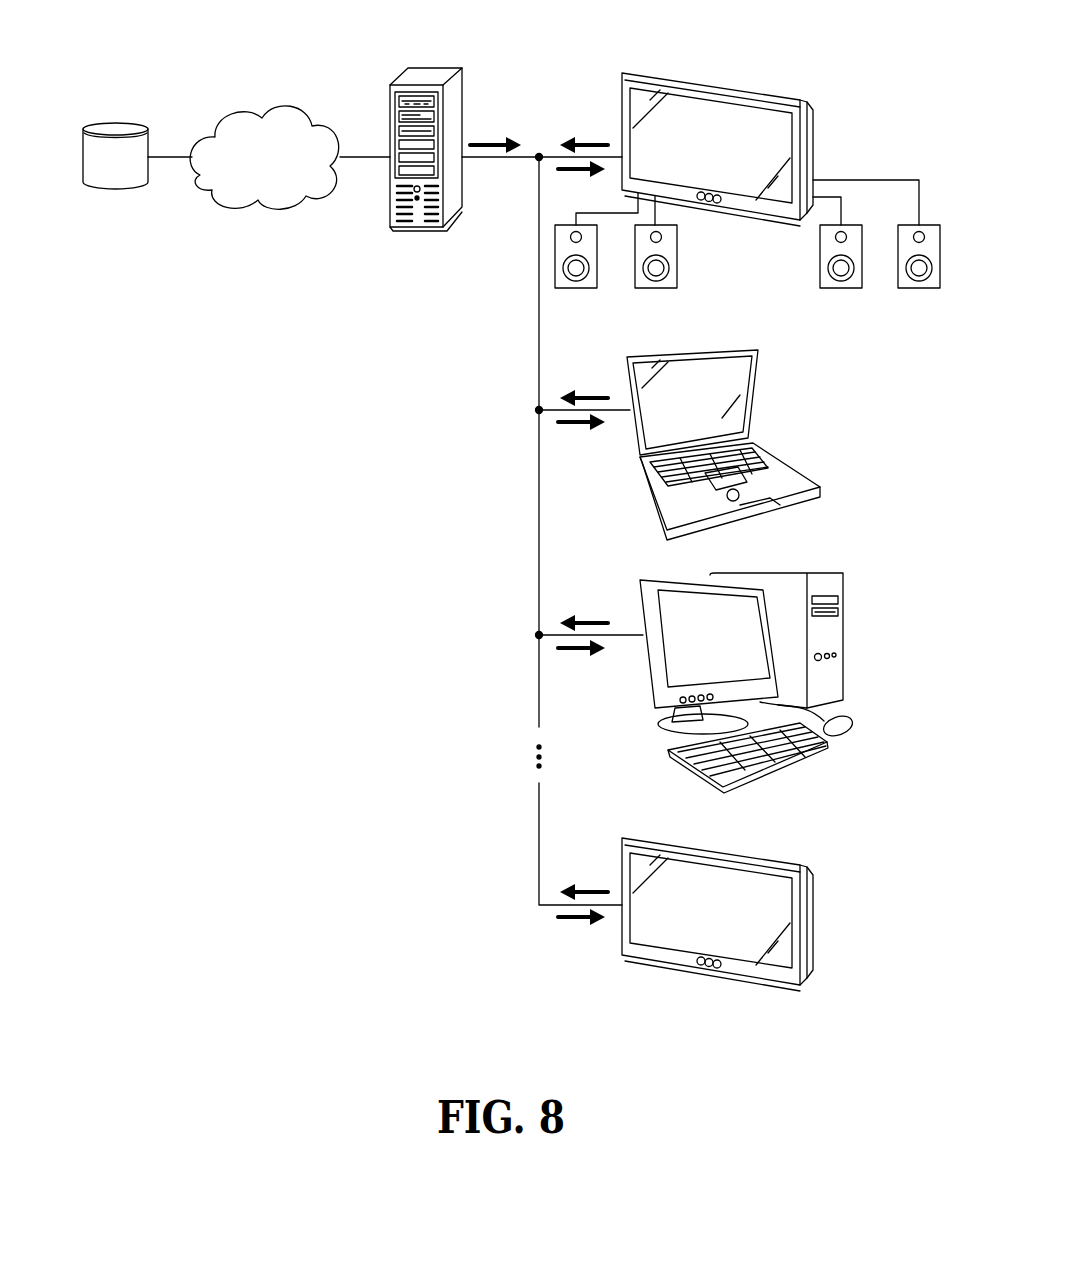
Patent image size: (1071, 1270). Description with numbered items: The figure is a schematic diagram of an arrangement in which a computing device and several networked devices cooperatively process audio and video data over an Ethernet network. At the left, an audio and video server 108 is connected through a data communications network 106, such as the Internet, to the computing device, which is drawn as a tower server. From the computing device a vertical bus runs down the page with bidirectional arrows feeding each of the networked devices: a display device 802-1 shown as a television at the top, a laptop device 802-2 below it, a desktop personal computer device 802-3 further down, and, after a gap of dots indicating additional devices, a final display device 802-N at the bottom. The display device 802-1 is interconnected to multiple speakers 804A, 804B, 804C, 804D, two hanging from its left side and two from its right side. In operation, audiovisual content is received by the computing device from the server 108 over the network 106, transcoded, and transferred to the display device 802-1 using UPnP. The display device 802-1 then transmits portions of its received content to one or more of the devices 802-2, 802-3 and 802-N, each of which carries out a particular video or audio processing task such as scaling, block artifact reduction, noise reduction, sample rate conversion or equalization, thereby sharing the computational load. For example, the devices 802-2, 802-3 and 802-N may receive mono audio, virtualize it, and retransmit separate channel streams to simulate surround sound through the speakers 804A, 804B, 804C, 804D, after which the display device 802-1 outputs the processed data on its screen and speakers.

The data communications network 106 is at (248, 177).
The audio and video server 108 is at (93, 180).
The display device 802-1 is at (782, 135).
The networked device 802-2 is at (786, 418).
The networked device 802-3 is at (860, 630).
The networked device 802-N is at (836, 905).
The speaker 804A is at (576, 288).
The speaker 804B is at (656, 288).
The speaker 804C is at (841, 288).
The speaker 804D is at (919, 288).